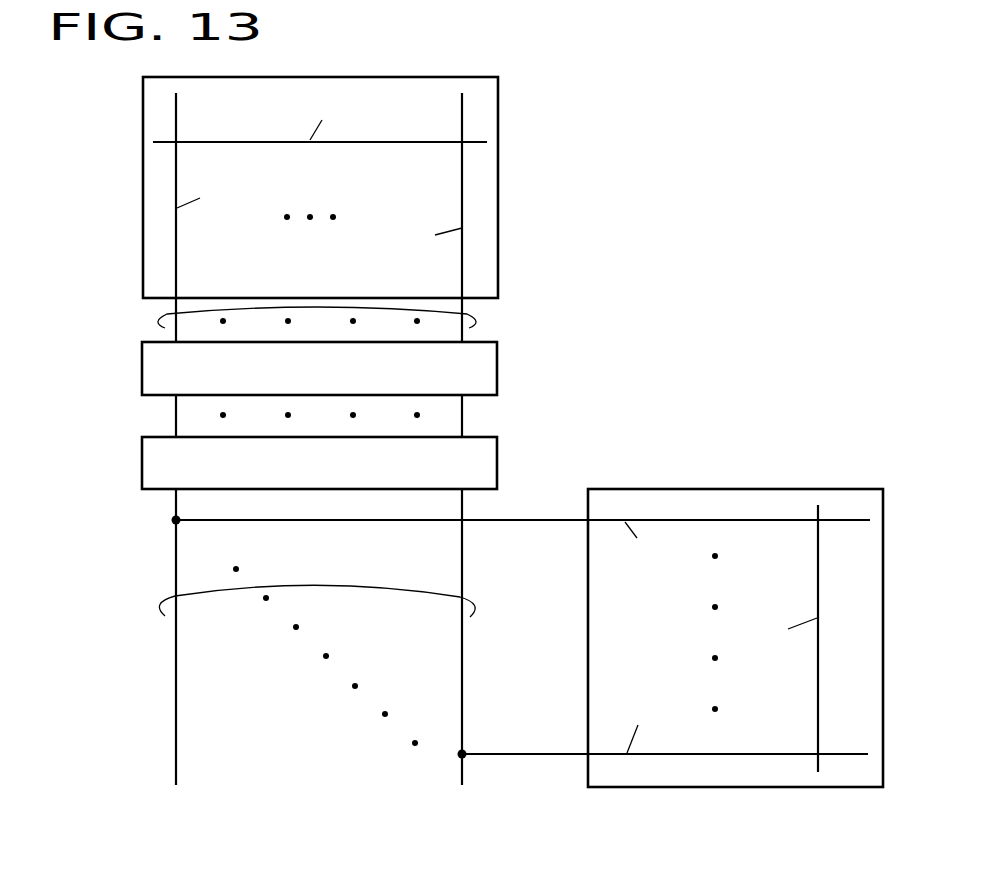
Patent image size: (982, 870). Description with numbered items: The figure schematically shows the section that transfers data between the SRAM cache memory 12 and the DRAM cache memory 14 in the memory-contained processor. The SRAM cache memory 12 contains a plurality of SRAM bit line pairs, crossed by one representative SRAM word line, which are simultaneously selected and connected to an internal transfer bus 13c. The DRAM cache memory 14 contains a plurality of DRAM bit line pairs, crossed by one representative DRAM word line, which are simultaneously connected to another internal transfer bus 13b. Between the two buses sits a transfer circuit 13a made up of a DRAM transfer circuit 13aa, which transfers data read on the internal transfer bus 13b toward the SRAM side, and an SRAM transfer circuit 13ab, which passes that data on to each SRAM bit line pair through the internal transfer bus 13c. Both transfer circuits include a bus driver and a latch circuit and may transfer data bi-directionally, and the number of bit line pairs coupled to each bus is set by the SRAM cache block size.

The SRAM cache memory 12 is at (500, 188).
The transfer circuit 13a is at (391, 413).
The DRAM transfer circuit 13aa is at (490, 457).
The SRAM transfer circuit 13ab is at (490, 373).
The internal transfer bus 13b is at (157, 605).
The internal transfer bus 13c is at (470, 323).
The DRAM cache memory 14 is at (772, 487).